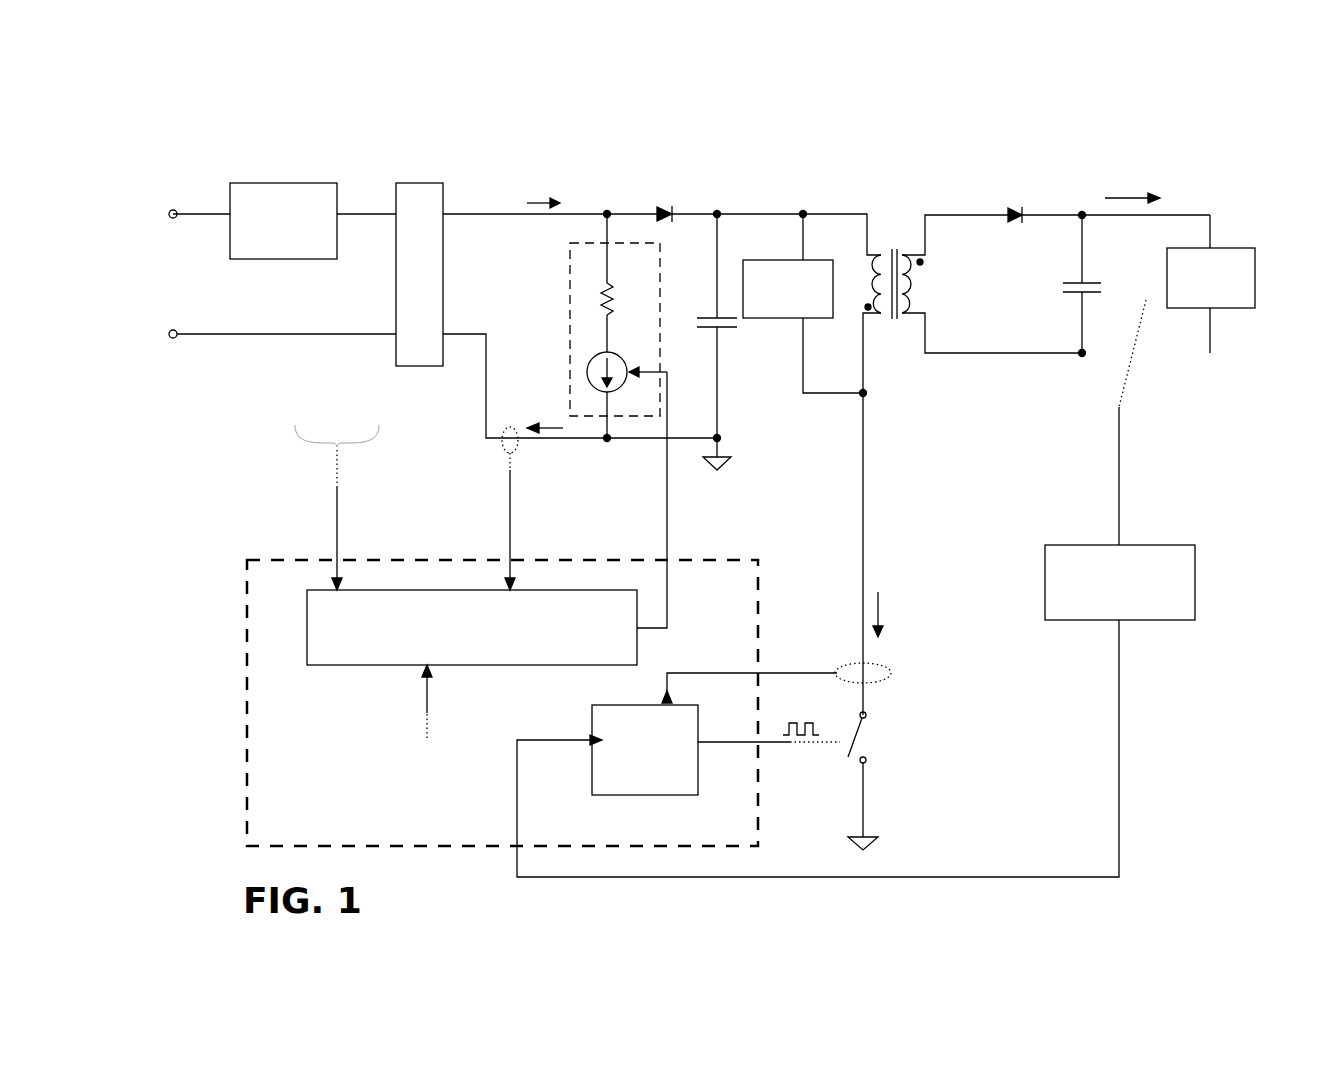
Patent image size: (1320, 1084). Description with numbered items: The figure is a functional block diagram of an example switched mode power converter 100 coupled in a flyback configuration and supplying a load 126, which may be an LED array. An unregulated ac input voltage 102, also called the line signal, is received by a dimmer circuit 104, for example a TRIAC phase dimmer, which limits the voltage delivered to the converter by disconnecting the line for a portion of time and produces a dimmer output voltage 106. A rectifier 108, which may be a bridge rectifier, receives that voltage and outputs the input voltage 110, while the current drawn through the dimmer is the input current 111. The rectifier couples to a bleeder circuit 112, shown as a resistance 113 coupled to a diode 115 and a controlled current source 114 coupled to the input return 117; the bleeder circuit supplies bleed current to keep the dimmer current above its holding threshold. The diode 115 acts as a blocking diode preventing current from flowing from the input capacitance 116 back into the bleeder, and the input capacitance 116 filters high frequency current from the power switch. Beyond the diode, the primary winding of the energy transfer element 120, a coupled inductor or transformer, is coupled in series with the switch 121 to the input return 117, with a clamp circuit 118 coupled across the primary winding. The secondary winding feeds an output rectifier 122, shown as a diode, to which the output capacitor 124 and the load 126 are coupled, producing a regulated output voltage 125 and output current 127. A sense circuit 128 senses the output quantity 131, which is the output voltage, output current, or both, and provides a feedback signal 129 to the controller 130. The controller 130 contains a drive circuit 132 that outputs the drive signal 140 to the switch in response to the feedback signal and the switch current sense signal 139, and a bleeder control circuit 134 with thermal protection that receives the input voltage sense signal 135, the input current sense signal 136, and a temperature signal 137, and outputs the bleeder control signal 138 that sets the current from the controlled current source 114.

The power converter 100 is at (1256, 133).
The ac input voltage VAC 102 is at (150, 240).
The dimmer circuit 104 is at (302, 183).
The dimmer output voltage VDO 106 is at (337, 278).
The rectifier 108 is at (422, 181).
The input voltage VIN 110 is at (483, 260).
The input current IIN 111 is at (546, 166).
The bleeder circuit 112 is at (568, 268).
The resistance 113 is at (598, 310).
The controlled current source 114 is at (590, 354).
The diode 115 is at (656, 204).
The input capacitance 116 is at (691, 312).
The input return 117 is at (729, 458).
The clamp circuit 118 is at (818, 328).
The energy transfer element T1 120 is at (893, 345).
The switch S1 121 is at (898, 723).
The rectifier D1 122 is at (1000, 210).
The output capacitor C1 124 is at (1054, 300).
The output voltage VO 125 is at (1130, 270).
The load 126 is at (1224, 246).
The output current IO 127 is at (1126, 166).
The sense circuit 128 is at (1197, 580).
The feedback signal UFB 129 is at (1170, 716).
The controller 130 is at (232, 684).
The output quantity UO 131 is at (1137, 423).
The drive circuit 132 is at (613, 704).
The bleeder control circuit 134 is at (320, 668).
The input voltage sense signal 135 is at (228, 513).
The input current sense signal 136 is at (521, 527).
The temperature signal 137 is at (418, 707).
The bleeder control signal UBLEED 138 is at (656, 543).
The switch current sense signal 139 is at (790, 664).
The drive signal 140 is at (800, 805).